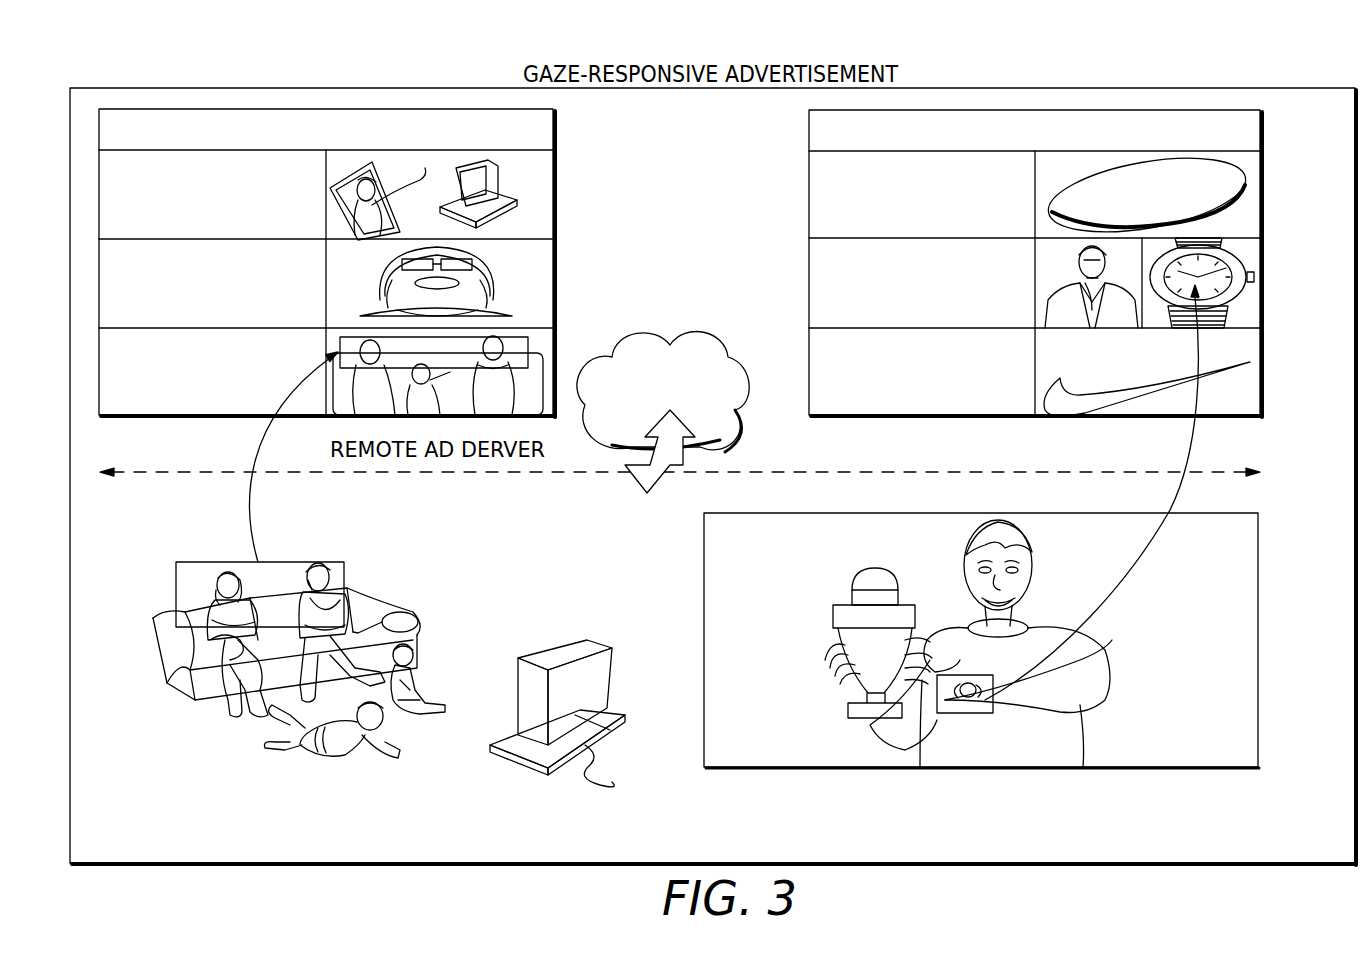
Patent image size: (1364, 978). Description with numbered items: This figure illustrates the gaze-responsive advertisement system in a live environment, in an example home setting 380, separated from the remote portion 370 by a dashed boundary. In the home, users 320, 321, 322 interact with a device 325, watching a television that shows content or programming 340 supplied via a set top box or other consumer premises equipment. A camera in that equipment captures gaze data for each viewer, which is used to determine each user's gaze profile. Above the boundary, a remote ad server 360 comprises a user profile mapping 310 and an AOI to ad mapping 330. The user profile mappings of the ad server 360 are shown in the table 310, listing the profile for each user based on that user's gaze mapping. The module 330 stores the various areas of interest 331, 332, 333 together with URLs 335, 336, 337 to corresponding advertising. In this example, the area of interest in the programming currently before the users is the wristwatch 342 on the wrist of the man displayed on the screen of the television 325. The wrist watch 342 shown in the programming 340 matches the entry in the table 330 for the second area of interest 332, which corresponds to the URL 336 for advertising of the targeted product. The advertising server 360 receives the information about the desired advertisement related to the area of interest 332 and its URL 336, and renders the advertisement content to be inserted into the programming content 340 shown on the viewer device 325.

The user profile mapping 310 is at (90, 272).
The user 320 is at (333, 562).
The user 321 is at (328, 758).
The user 322 is at (418, 688).
The device 325 is at (600, 645).
The AOI to ad mapping 330 is at (1262, 133).
The area of interest 331 is at (819, 191).
The area of interest 332 is at (819, 281).
The area of interest 333 is at (819, 371).
The URL 335 is at (1250, 177).
The URL 336 is at (1264, 322).
The URL 337 is at (1264, 392).
The programming 340 is at (1274, 640).
The wristwatch 342 is at (966, 714).
The remote ad server 360 is at (690, 345).
The remote ad server region boundary 370 is at (358, 479).
The home setting 380 is at (1037, 463).